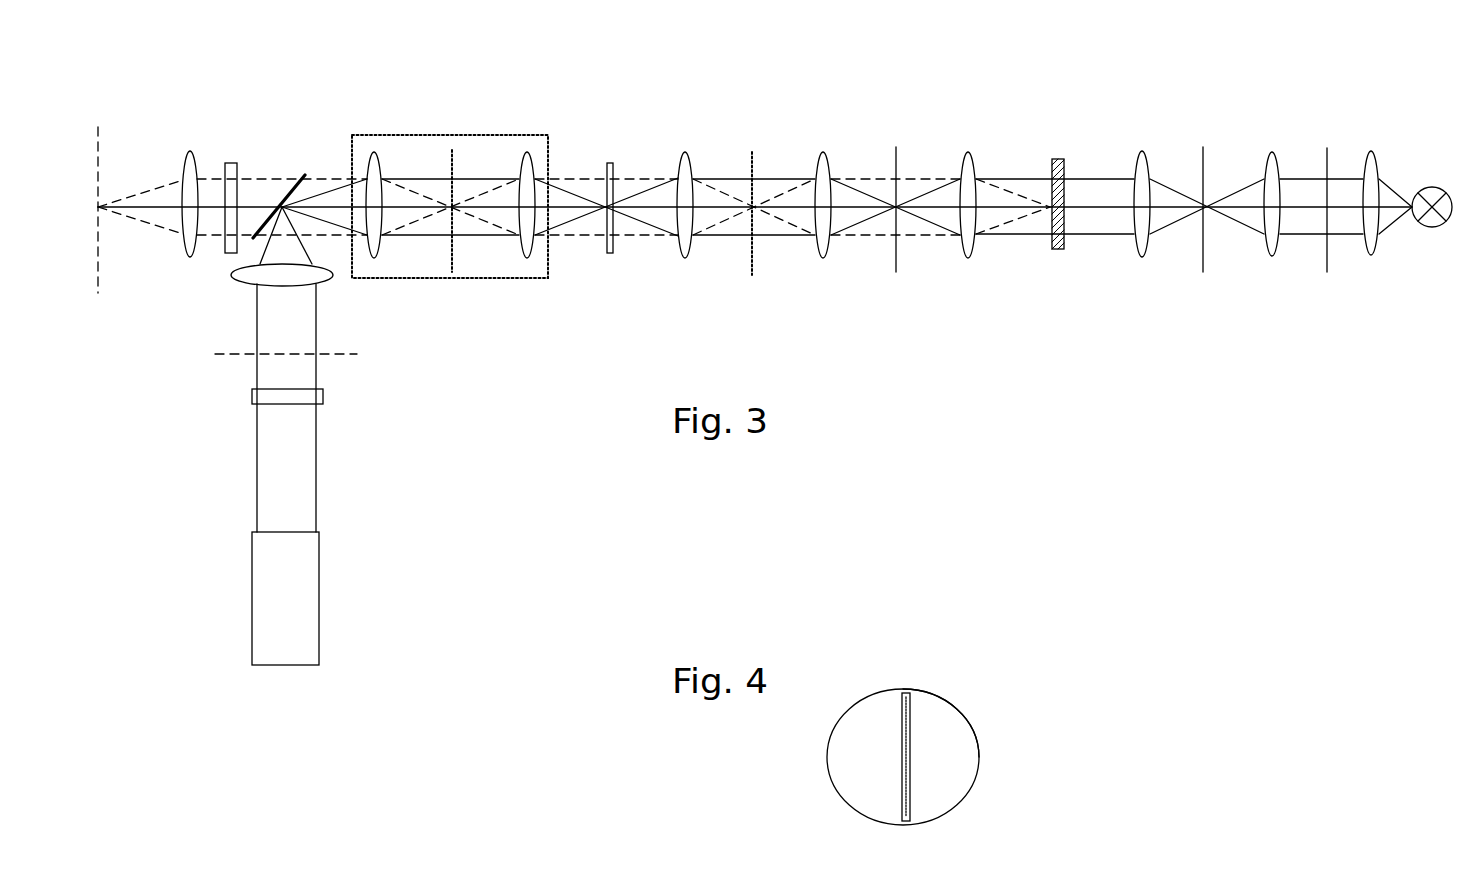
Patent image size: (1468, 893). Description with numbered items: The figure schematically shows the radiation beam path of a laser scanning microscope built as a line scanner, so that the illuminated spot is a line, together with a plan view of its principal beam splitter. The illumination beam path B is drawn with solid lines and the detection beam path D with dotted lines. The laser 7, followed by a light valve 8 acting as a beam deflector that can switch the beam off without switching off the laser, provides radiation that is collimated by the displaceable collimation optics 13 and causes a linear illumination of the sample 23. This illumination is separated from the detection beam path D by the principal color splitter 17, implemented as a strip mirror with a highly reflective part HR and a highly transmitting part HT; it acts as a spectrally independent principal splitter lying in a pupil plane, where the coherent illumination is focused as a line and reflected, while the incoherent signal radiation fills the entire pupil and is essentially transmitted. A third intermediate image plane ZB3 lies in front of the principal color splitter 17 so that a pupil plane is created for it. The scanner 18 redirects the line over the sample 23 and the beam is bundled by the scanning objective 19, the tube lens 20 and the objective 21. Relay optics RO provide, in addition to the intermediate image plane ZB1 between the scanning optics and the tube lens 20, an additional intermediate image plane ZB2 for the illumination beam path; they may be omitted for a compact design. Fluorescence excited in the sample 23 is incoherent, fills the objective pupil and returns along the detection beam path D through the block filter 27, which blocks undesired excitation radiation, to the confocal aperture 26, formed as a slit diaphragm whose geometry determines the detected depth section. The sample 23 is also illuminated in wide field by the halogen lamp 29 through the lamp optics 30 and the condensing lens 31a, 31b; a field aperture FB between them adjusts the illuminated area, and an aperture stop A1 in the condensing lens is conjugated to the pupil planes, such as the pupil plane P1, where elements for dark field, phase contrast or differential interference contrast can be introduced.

In FIG. 3, the confocal pinhole aperture 26 is at (98, 148).
In FIG. 3, the detection beam path D is at (148, 223).
In FIG. 3, the block filter 27 is at (230, 160).
In FIG. 3, the principal color splitter 17 is at (305, 175).
In FIG. 4, the principal color splitter 17 is at (815, 822).
In FIG. 3, the collimation optics 13 is at (328, 280).
In FIG. 3, the relay optics RO is at (475, 135).
In FIG. 3, the additional intermediate image plane ZB2 is at (452, 272).
In FIG. 3, the scanner 18 is at (610, 253).
In FIG. 3, the scanning objective 19 is at (684, 153).
In FIG. 3, the intermediate image plane ZB1 is at (752, 275).
In FIG. 3, the tube lens 20 is at (823, 152).
In FIG. 3, the pupil plane P1 is at (896, 272).
In FIG. 3, the objective 21 is at (968, 152).
In FIG. 3, the sample 23 is at (1060, 159).
In FIG. 3, the condensing lens 31b is at (1140, 257).
In FIG. 3, the aperture stop A1 is at (1203, 147).
In FIG. 3, the condensing lens 31a is at (1272, 255).
In FIG. 3, the field aperture FB is at (1327, 148).
In FIG. 3, the lamp optics 30 is at (1371, 150).
In FIG. 3, the halogen lamp 29 is at (1432, 227).
In FIG. 3, the third intermediate image plane ZB3 is at (215, 354).
In FIG. 3, the light valve 8 is at (323, 396).
In FIG. 3, the illumination beam path B is at (316, 470).
In FIG. 3, the laser 7 is at (319, 612).
In FIG. 4, the highly reflective part HR is at (900, 710).
In FIG. 4, the highly transmitting part HT is at (945, 695).